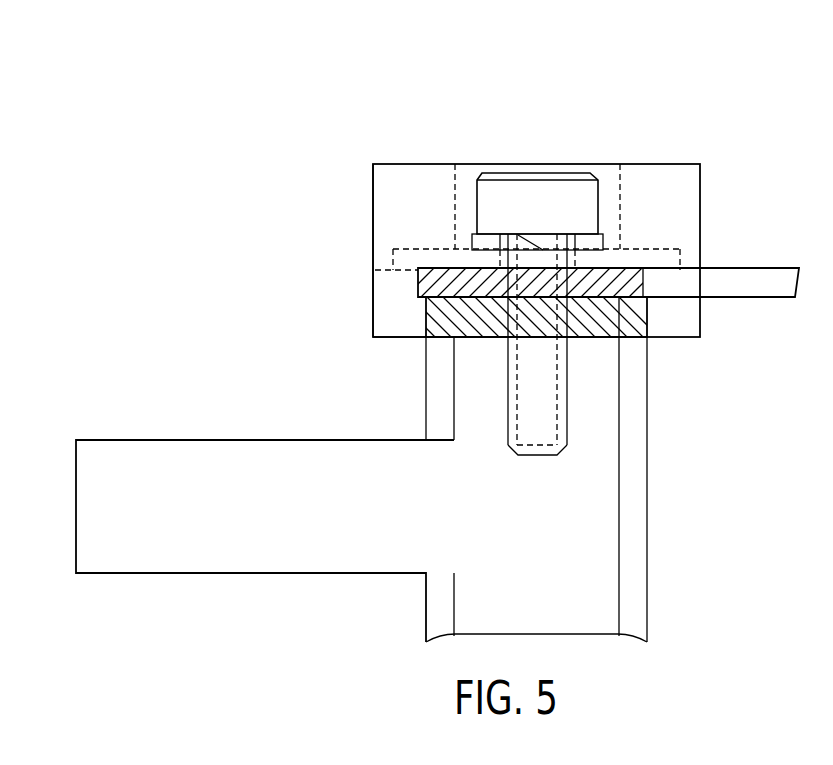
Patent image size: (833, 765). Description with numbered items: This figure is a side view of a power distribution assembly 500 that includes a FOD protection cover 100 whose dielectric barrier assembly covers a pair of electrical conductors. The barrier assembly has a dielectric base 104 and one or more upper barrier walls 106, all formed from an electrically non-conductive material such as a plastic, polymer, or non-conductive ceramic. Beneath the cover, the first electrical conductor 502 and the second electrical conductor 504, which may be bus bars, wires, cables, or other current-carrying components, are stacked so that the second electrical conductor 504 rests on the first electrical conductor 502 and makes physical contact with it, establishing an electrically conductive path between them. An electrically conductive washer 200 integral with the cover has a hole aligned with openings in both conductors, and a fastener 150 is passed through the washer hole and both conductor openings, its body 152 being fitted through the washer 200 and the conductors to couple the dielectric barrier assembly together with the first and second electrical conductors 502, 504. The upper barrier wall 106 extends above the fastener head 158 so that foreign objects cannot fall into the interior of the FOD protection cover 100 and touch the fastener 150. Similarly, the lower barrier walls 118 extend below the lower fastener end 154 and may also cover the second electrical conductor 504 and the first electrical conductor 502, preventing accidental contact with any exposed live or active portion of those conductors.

The power distribution assembly 500 is at (340, 108).
The FOD protection cover 100 is at (654, 164).
The base 104 is at (428, 248).
The upper barrier wall 106 is at (383, 197).
The lower barrier wall 118 is at (387, 323).
The fastener 150 is at (541, 366).
The body 152 is at (553, 400).
The lower fastener end 154 is at (518, 456).
The fastener head 158 is at (585, 217).
The washer 200 is at (545, 253).
The first electrical conductor 502 is at (418, 278).
The second electrical conductor 504 is at (243, 450).